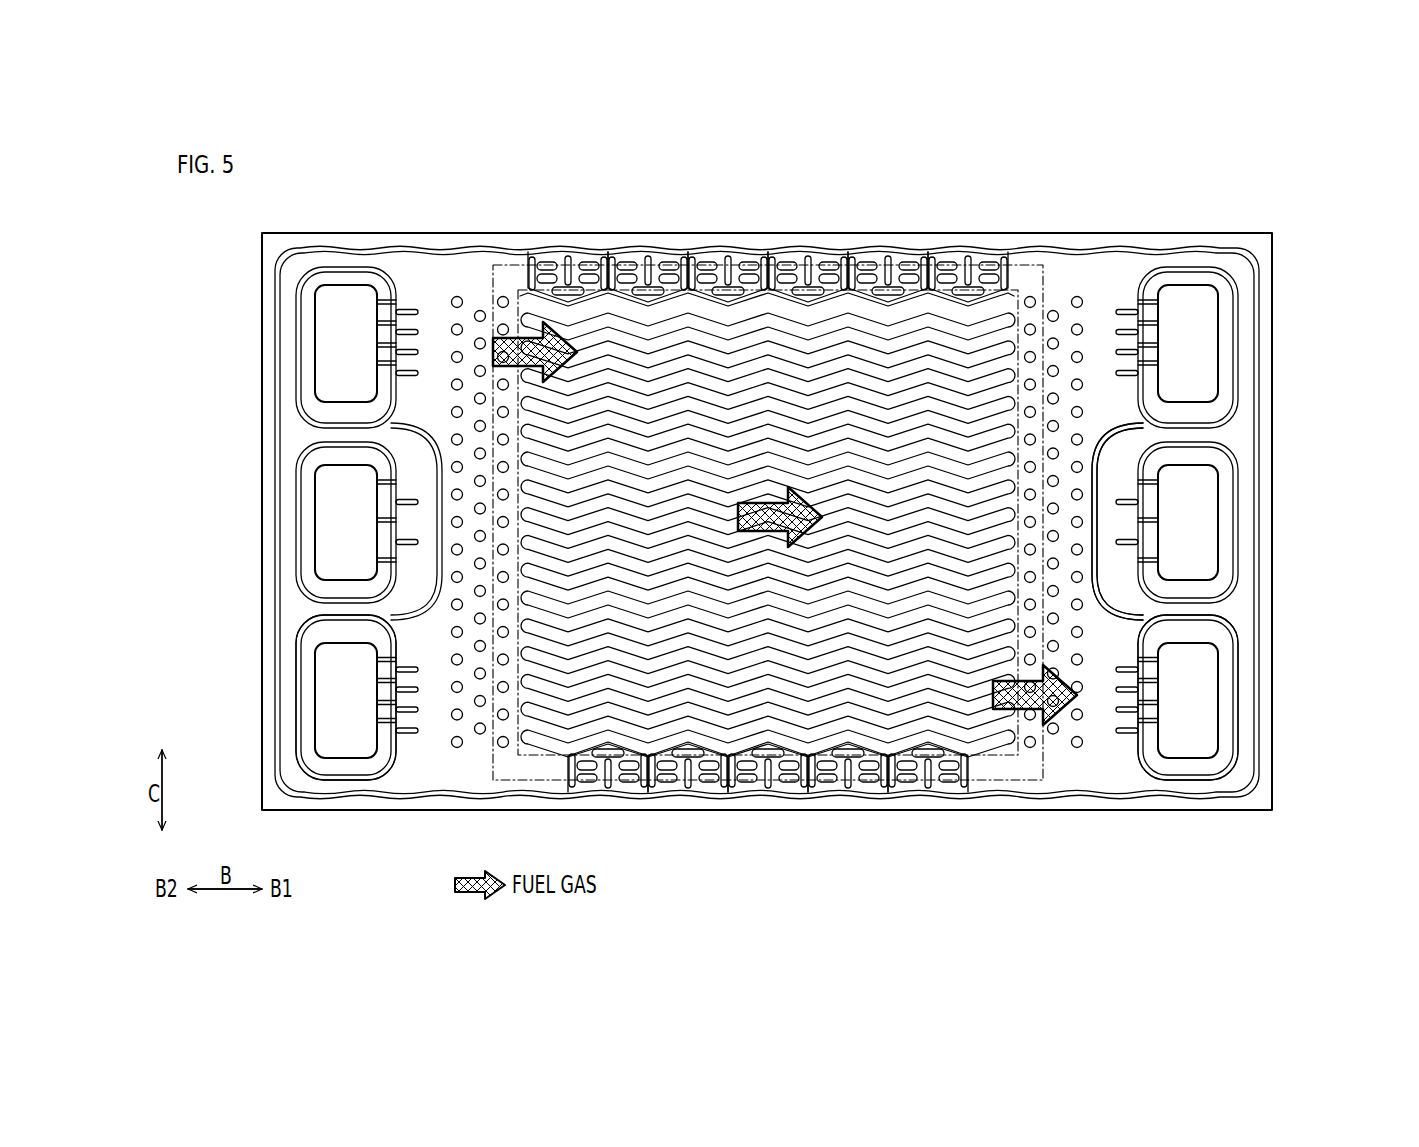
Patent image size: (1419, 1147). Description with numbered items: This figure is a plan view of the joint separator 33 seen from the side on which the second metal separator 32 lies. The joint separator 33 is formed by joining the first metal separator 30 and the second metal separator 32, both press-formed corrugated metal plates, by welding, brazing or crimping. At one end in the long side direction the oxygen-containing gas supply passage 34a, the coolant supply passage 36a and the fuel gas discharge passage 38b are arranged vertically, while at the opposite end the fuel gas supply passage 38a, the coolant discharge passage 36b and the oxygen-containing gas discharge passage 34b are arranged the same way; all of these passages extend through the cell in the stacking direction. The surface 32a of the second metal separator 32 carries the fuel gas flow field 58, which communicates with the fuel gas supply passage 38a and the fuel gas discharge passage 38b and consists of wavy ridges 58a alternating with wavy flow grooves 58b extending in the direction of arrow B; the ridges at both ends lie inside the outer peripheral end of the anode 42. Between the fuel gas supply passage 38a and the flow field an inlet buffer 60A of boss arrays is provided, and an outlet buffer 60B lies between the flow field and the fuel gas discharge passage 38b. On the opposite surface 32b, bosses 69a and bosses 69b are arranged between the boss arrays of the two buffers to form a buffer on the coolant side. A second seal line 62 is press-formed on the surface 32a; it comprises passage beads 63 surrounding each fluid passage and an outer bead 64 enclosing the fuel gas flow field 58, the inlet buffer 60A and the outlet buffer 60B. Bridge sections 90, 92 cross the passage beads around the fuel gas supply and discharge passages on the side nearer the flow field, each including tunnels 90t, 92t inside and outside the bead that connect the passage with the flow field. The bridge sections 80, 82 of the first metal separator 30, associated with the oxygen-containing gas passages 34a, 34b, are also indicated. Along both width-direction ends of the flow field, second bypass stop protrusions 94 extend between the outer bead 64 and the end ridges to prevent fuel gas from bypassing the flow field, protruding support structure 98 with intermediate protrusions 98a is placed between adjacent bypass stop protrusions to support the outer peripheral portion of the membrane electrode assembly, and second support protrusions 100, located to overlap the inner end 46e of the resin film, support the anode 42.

The first metal separator 30 is at (648, 228).
The second metal separator 32 is at (626, 228).
The surface of the second metal separator 32a is at (546, 254).
The surface of the second metal separator 32b is at (586, 254).
The joint separator 33 is at (1252, 168).
The oxygen-containing gas supply passage 34a is at (1198, 330).
The oxygen-containing gas discharge passage 34b is at (330, 680).
The coolant supply passage 36a is at (1203, 500).
The coolant discharge passage 36b is at (325, 500).
The fuel gas supply passage 38a is at (330, 312).
The fuel gas discharge passage 38b is at (1200, 688).
The anode 42 is at (515, 262).
The inner end of the resin film 46e is at (998, 760).
The fuel gas flow field 58 is at (752, 190).
The wavy ridges 58a is at (706, 330).
The wavy flow grooves 58b is at (735, 320).
The inlet buffer 60A is at (503, 577).
The outlet buffer 60B is at (1030, 607).
The second seal line 62 is at (1287, 853).
The passage bead 63 is at (297, 322).
The outer bead 64 is at (1170, 800).
The bosses 69a is at (480, 310).
The bosses 69b is at (1053, 310).
The bridge section 80 is at (1127, 276).
The bridge section 82 is at (411, 745).
The bridge section 90 is at (424, 292).
The tunnels 90t is at (414, 305).
The bridge section 92 is at (1110, 752).
The tunnels 92t is at (1133, 737).
The second bypass stop protrusions 94 is at (790, 885).
The protruding support structure 98 is at (784, 262).
The intermediate protrusions 98a is at (912, 258).
The second support protrusions 100 is at (817, 285).